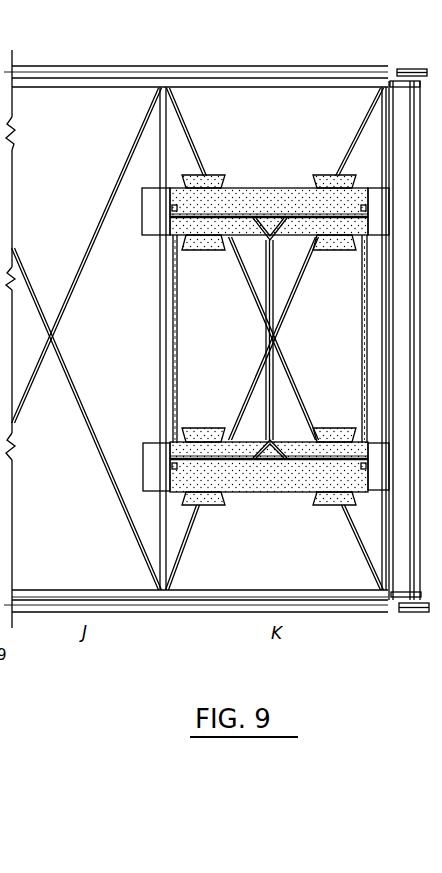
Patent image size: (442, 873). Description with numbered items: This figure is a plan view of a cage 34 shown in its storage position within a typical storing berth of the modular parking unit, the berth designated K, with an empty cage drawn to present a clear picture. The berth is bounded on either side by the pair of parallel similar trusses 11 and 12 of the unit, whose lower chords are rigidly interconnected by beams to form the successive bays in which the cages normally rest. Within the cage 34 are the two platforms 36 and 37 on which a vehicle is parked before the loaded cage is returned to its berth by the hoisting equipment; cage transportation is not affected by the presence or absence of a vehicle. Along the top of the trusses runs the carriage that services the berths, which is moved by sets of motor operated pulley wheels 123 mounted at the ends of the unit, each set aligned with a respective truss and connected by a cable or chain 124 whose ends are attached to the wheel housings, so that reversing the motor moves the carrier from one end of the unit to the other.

The truss 11 is at (252, 73).
The truss 12 is at (320, 617).
The pulley wheel 123 is at (412, 68).
The cable or chain 124 is at (146, 604).
The platform 36 is at (256, 196).
The platform 37 is at (263, 487).
The cage 34 is at (305, 526).